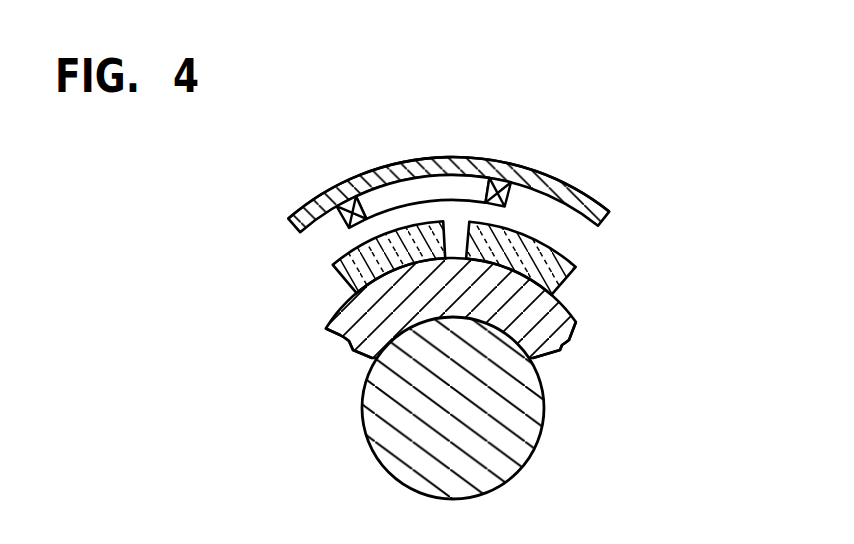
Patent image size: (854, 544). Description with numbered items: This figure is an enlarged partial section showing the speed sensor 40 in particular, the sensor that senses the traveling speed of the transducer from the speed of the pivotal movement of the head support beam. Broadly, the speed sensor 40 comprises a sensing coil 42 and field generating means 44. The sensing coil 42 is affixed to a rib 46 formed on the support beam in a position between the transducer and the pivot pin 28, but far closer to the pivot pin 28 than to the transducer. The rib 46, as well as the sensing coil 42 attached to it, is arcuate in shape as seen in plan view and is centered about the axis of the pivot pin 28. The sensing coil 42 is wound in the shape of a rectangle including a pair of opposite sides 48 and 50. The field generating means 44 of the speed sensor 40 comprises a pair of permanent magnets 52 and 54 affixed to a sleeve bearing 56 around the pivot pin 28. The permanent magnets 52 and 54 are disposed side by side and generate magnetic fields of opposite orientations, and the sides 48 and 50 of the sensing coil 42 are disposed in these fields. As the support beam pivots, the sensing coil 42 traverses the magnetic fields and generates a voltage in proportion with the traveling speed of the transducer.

The pivot pin 28 is at (544, 412).
The speed sensor 40 is at (511, 165).
The sensing coil 42 is at (449, 182).
The field generating means 44 is at (462, 291).
The rib 46 is at (574, 184).
The side of sensing coil 48 is at (350, 200).
The side of sensing coil 50 is at (504, 180).
The permanent magnet 52 is at (341, 283).
The permanent magnet 54 is at (577, 267).
The sleeve bearing 56 is at (566, 337).